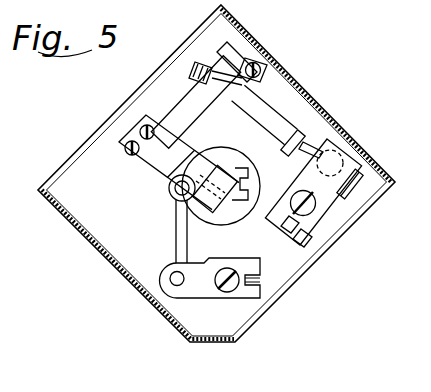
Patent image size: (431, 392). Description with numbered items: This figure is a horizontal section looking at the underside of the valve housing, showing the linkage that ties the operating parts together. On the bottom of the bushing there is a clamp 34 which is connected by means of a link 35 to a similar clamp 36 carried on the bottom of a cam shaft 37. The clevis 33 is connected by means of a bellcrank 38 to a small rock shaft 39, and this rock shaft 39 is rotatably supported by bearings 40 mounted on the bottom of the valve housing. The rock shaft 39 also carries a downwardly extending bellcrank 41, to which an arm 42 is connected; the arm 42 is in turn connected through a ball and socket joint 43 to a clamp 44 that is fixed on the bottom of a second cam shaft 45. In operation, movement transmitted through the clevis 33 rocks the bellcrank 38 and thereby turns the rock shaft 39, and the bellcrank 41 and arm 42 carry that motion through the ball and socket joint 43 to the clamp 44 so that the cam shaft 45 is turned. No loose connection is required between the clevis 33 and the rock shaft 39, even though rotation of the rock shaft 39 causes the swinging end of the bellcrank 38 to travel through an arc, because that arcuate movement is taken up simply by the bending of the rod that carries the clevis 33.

The clevis 33 is at (226, 168).
The clamp 34 is at (249, 178).
The link 35 is at (176, 235).
The clamp 36 is at (218, 262).
The cam shaft 37 is at (229, 292).
The bellcrank 38 is at (213, 168).
The rock shaft 39 is at (180, 110).
The bearings 40 is at (241, 58).
The bellcrank 41 is at (198, 71).
The arm 42 is at (290, 101).
The ball and socket joint 43 is at (347, 129).
The clamp 44 is at (318, 202).
The cam shaft 45 is at (293, 193).